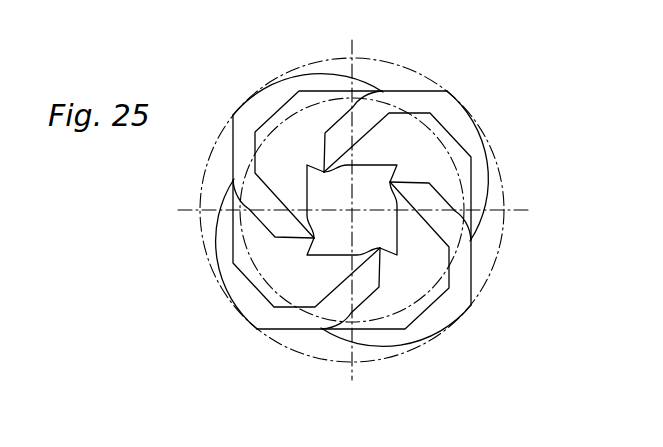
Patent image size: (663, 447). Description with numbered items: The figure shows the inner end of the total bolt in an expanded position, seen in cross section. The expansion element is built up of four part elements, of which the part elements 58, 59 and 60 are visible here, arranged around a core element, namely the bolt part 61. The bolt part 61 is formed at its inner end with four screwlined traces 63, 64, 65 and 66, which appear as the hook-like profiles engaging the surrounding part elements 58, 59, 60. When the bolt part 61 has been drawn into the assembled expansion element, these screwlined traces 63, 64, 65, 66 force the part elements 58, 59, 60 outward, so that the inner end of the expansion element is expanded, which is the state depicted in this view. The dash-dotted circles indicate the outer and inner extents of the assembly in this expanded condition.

The part element 58 is at (456, 132).
The part element 59 is at (444, 310).
The part element 60 is at (243, 289).
The bolt part 61 is at (286, 92).
The screwlined trace 63 is at (323, 170).
The screwlined trace 64 is at (391, 181).
The screwlined trace 65 is at (382, 250).
The screwlined trace 66 is at (312, 240).